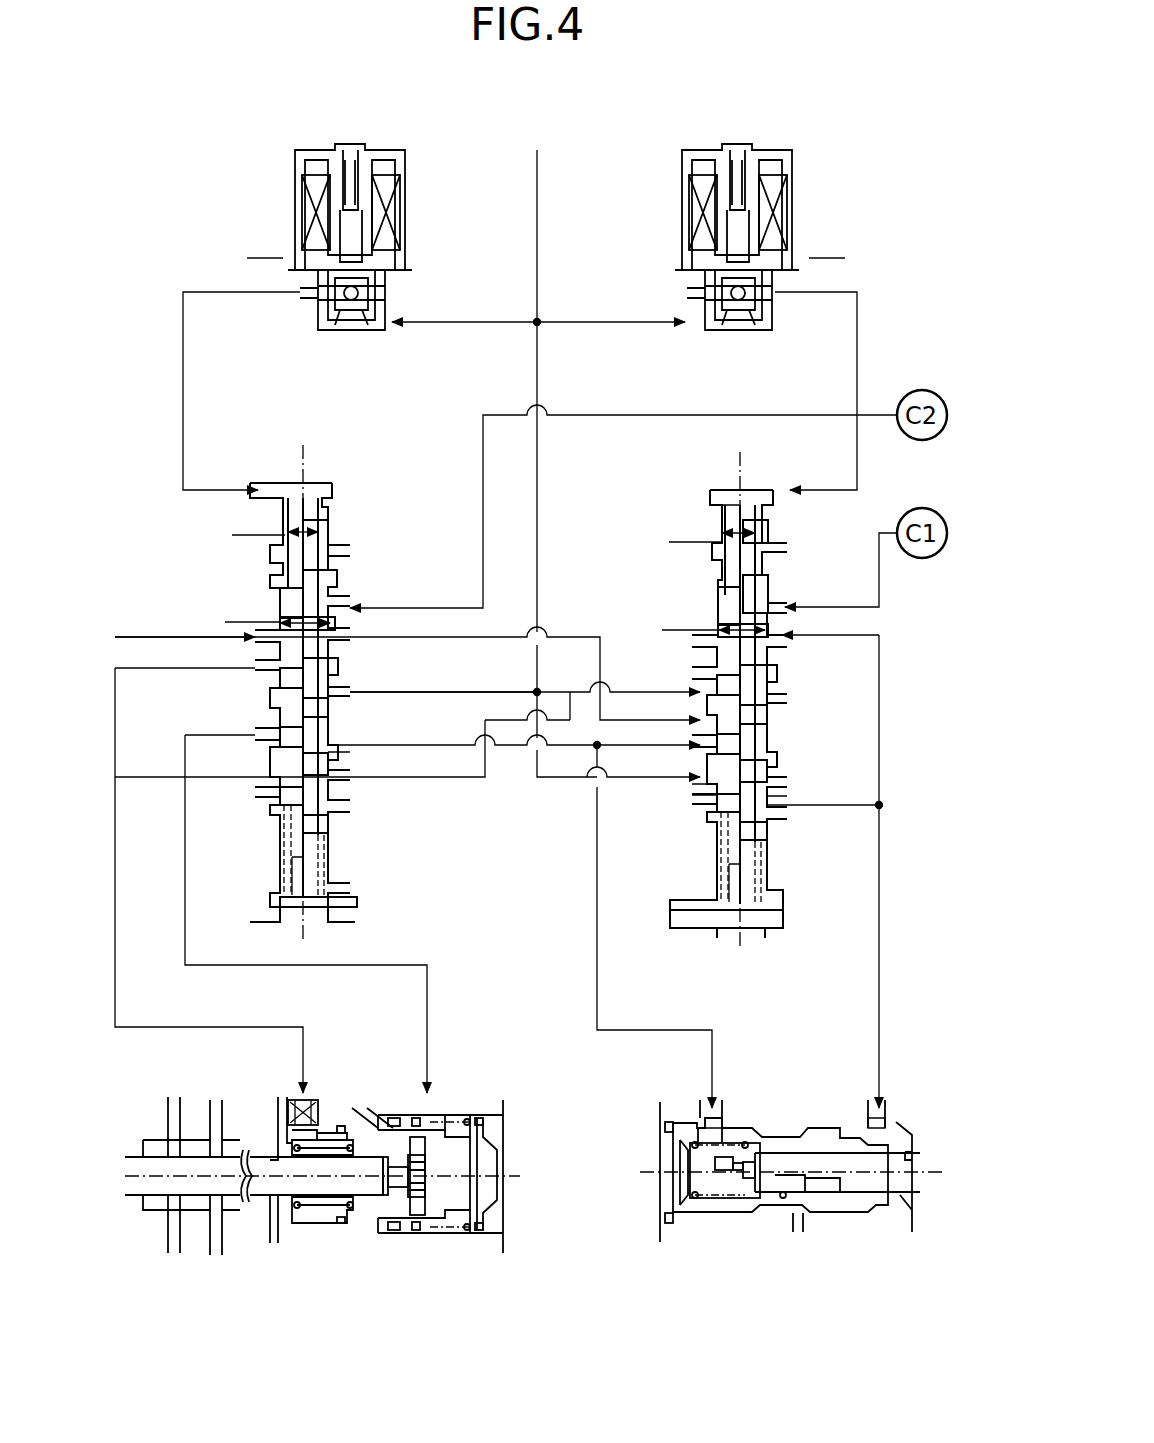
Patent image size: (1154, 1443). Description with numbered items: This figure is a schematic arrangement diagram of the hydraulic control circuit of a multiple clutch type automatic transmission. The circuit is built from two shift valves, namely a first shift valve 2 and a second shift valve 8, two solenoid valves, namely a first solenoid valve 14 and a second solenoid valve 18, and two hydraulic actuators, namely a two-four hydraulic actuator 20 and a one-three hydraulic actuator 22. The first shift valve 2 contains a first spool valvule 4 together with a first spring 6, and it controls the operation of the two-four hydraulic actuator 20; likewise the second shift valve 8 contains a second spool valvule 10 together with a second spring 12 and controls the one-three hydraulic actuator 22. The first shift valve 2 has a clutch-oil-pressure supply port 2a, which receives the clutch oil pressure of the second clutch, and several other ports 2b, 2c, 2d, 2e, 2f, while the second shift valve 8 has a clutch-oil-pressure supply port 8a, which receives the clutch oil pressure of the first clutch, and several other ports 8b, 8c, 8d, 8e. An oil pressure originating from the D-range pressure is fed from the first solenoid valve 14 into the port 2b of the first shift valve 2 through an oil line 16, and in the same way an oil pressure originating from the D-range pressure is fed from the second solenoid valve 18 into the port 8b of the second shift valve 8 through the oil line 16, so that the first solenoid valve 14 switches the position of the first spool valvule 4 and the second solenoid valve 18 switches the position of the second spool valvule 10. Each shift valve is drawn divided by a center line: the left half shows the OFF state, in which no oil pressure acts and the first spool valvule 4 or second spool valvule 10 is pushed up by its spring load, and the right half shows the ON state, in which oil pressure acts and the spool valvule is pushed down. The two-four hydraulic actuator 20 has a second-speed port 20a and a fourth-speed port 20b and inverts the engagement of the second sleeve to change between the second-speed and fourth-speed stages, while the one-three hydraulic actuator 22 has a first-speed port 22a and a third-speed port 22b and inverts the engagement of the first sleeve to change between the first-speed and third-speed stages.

The first shift valve 2 is at (305, 440).
The clutch-oil-pressure supply port 2a is at (342, 612).
The port 2b is at (262, 483).
The port 2c is at (343, 694).
The port 2d is at (260, 668).
The port 2e is at (343, 752).
The port 2f is at (262, 733).
The first spool valvule 4 is at (285, 600).
The first spring 6 is at (283, 848).
The second shift valve 8 is at (675, 487).
The clutch-oil-pressure supply port 8a is at (778, 615).
The port 8b is at (780, 492).
The port 8c is at (700, 790).
The port 8d is at (700, 742).
The port 8e is at (778, 808).
The second spool valvule 10 is at (720, 598).
The second spring 12 is at (722, 862).
The first solenoid valve 14 is at (375, 150).
The oil line 16 is at (537, 192).
The second solenoid valve 18 is at (762, 150).
The 2-4 hydraulic actuator 20 is at (322, 1179).
The second-speed port 20a is at (440, 1088).
The fourth-speed port 20b is at (313, 1088).
The 1-3 hydraulic actuator 22 is at (807, 1203).
The first-speed port 22a is at (735, 1120).
The third-speed port 22b is at (898, 1120).